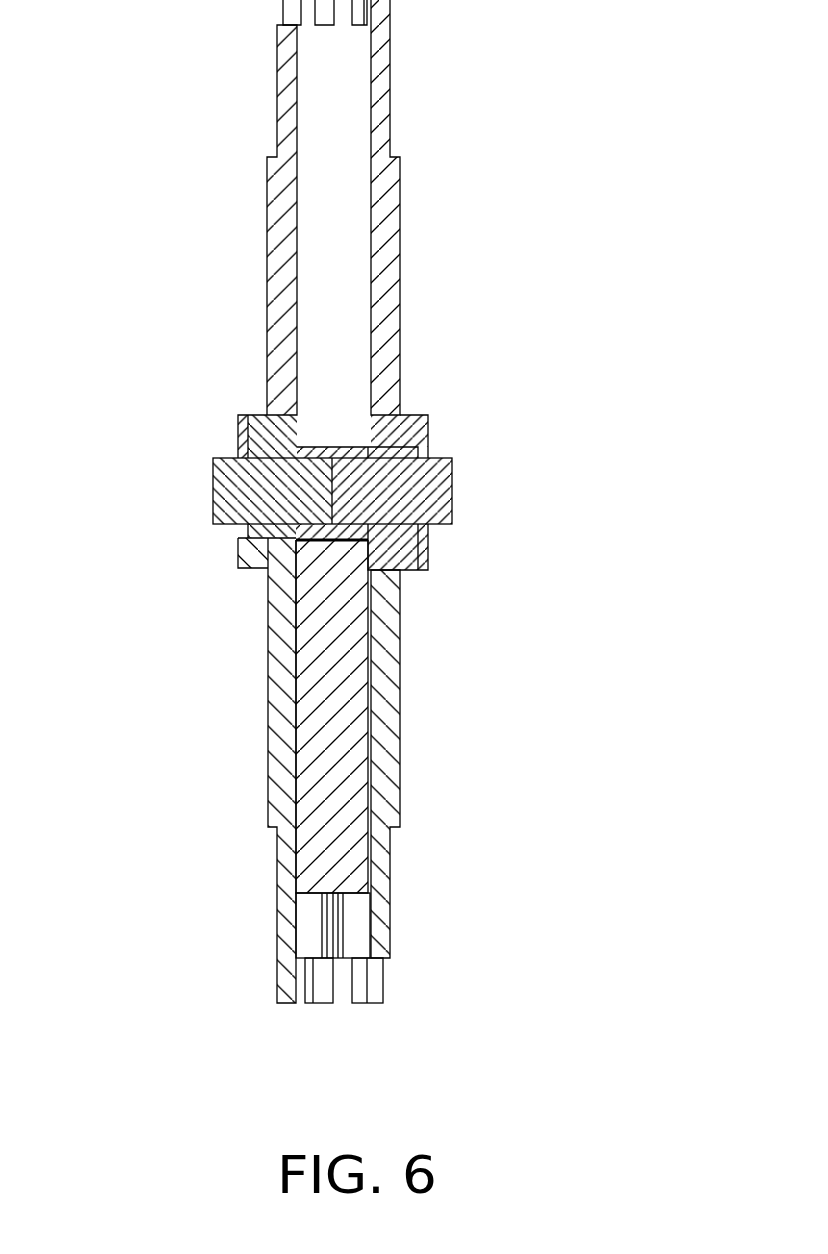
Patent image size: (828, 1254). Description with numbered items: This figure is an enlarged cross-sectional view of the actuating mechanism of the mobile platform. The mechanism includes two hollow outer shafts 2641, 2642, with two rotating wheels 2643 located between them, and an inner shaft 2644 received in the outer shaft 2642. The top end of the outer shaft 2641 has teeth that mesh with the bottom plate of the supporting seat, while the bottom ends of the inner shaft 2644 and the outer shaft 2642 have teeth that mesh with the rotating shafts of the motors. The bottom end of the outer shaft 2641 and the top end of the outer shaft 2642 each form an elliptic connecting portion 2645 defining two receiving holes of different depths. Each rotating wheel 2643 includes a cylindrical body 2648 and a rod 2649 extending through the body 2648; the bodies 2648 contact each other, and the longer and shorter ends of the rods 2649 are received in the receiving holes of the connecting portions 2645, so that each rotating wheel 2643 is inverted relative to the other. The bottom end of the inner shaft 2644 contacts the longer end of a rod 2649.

The outer shaft 2641 is at (387, 222).
The outer shaft 2642 is at (383, 710).
The rotating wheel 2643 is at (455, 492).
The inner shaft 2644 is at (352, 792).
The connecting portion 2645 is at (412, 422).
The body 2648 is at (445, 492).
The rod 2649 is at (408, 552).